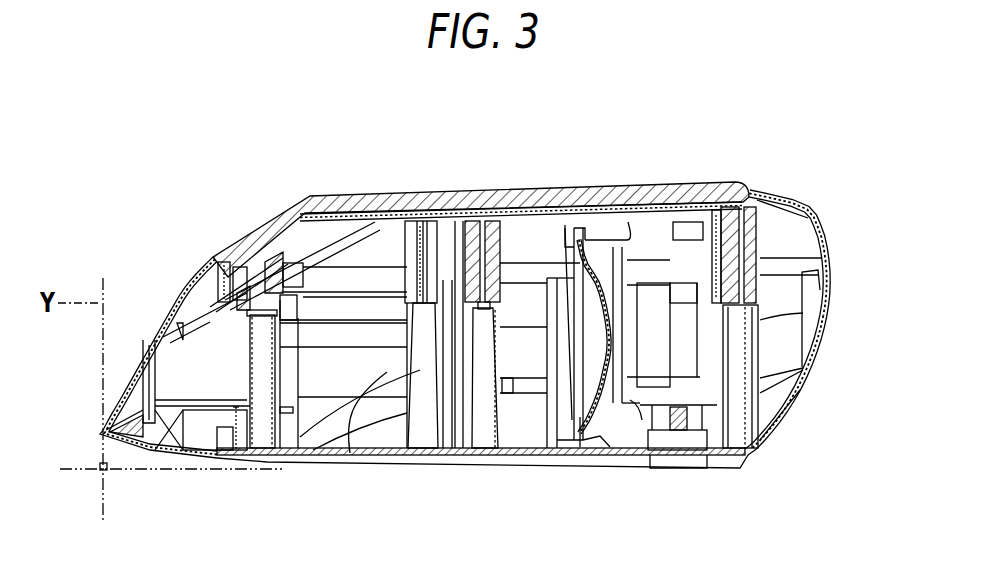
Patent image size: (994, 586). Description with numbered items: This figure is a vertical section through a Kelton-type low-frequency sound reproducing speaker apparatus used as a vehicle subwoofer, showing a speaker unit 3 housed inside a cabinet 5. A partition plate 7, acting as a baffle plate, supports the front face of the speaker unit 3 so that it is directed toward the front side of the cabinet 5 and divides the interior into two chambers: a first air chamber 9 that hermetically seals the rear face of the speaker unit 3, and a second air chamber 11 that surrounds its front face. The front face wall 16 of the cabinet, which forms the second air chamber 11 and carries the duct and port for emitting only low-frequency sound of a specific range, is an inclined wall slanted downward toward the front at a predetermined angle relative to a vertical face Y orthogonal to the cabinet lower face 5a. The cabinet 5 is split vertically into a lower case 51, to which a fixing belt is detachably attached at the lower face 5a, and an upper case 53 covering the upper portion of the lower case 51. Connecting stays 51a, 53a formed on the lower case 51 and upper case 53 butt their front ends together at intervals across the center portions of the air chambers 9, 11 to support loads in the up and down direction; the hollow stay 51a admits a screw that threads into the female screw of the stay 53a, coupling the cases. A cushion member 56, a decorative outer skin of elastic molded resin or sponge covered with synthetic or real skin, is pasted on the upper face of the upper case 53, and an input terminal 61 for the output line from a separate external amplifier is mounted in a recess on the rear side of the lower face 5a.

The speaker unit 3 is at (613, 260).
The cabinet 5 is at (892, 222).
The cabinet lower face 5a is at (413, 468).
The partition plate 7 is at (600, 240).
The first air chamber 9 is at (632, 403).
The second air chamber 11 is at (520, 360).
The front face wall 16 is at (181, 284).
The lower case 51 is at (790, 407).
The connecting stay 51a is at (262, 427).
The upper case 53 is at (823, 237).
The connecting stay 53a is at (410, 252).
The cushion member 56 is at (280, 226).
The input terminal 61 is at (677, 427).